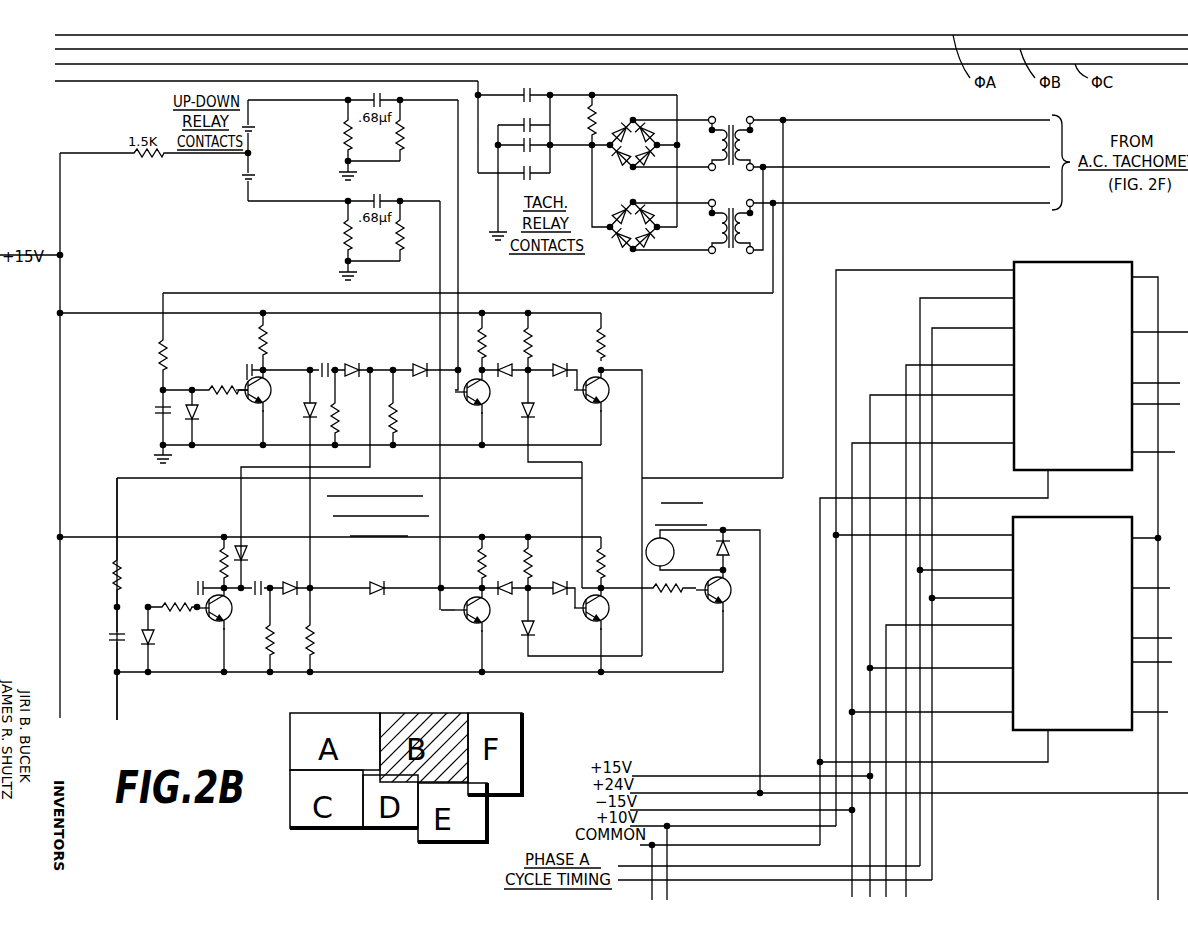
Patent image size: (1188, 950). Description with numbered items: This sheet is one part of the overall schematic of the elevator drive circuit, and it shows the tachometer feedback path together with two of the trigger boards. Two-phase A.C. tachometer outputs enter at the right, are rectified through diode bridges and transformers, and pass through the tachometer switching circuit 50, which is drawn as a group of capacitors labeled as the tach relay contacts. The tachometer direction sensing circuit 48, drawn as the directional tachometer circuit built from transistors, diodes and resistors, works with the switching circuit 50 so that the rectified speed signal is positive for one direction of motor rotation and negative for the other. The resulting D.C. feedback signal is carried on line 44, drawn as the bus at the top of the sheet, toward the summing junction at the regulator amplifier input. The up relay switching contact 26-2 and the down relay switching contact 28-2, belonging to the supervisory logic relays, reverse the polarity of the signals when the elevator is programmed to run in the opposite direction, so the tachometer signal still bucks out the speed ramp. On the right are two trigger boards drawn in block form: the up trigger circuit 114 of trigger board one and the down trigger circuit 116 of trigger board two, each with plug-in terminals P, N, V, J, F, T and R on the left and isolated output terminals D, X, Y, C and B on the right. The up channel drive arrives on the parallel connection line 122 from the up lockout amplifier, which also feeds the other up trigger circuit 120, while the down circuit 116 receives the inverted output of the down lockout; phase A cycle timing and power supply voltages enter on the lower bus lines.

The line 44 is at (92, 84).
The up relay switching contact 26-2 is at (258, 133).
The down relay switching contact 28-2 is at (258, 177).
The tachometer switching circuit 50 is at (560, 169).
The tachometer direction sensing circuit 48 is at (656, 420).
The up trigger circuit 120 is at (906, 378).
The parallel connection line 122 is at (893, 616).
The down trigger circuit 116 is at (1076, 432).
The up trigger circuit 114 is at (1075, 691).